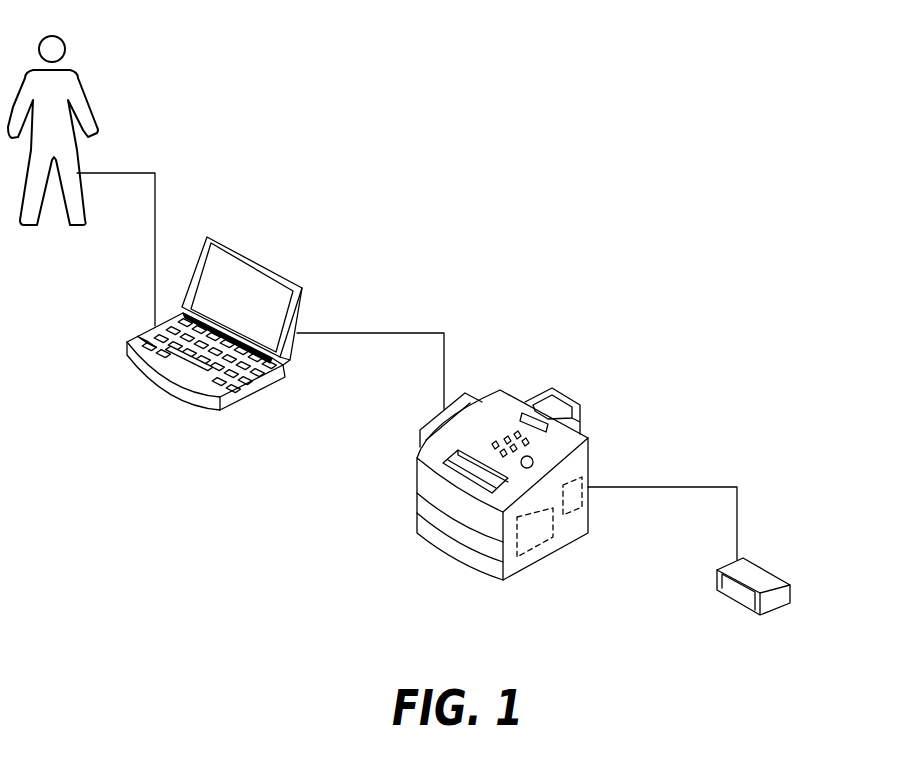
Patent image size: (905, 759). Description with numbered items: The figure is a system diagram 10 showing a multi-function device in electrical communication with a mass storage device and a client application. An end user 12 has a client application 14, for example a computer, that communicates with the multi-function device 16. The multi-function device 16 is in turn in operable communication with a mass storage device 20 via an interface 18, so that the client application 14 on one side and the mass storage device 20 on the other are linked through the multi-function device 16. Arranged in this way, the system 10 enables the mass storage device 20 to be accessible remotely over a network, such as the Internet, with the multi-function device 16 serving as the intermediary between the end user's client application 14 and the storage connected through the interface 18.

The system diagram 10 is at (467, 214).
The end user 12 is at (72, 72).
The client application 14 is at (260, 258).
The multi-function device 16 is at (565, 396).
The interface 18 is at (717, 486).
The mass storage device 20 is at (768, 568).